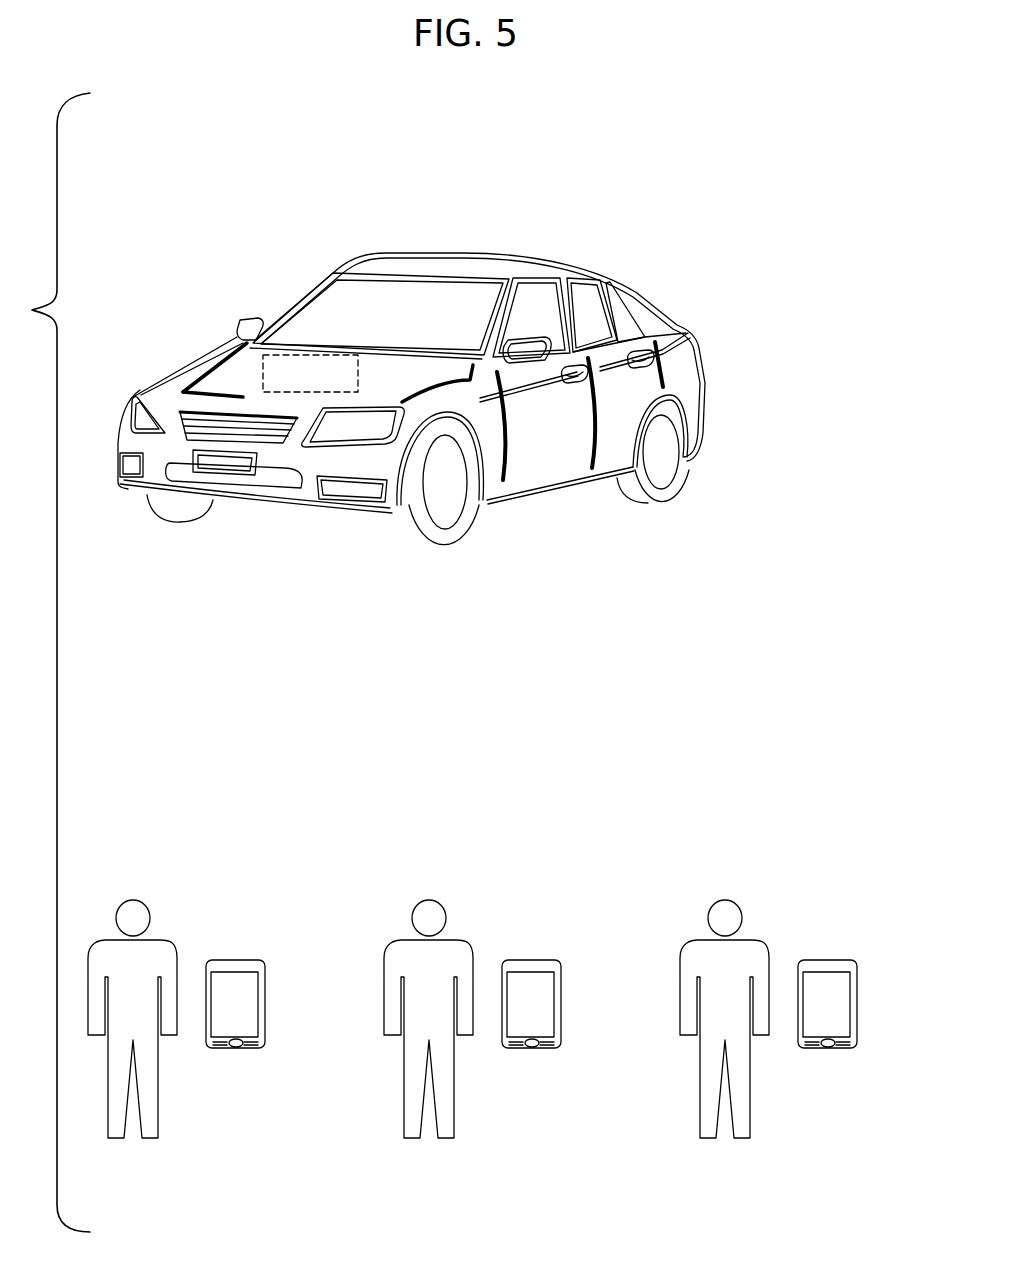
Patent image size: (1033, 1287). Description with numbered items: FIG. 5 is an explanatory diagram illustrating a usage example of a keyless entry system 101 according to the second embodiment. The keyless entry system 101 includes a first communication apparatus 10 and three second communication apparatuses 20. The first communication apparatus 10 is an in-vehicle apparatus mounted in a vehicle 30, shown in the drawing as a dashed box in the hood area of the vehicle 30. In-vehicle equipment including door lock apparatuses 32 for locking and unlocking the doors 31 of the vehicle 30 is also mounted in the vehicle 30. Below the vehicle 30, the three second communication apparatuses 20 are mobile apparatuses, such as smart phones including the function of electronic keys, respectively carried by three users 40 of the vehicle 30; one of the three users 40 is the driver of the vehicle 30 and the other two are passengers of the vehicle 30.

The keyless entry system 101 is at (617, 193).
The first communication apparatus 10 is at (308, 370).
The vehicle 30 is at (462, 253).
The door 31 is at (542, 445).
The door lock apparatus 32 is at (590, 357).
The user 40 is at (152, 948).
The second communication apparatus 20 is at (235, 981).